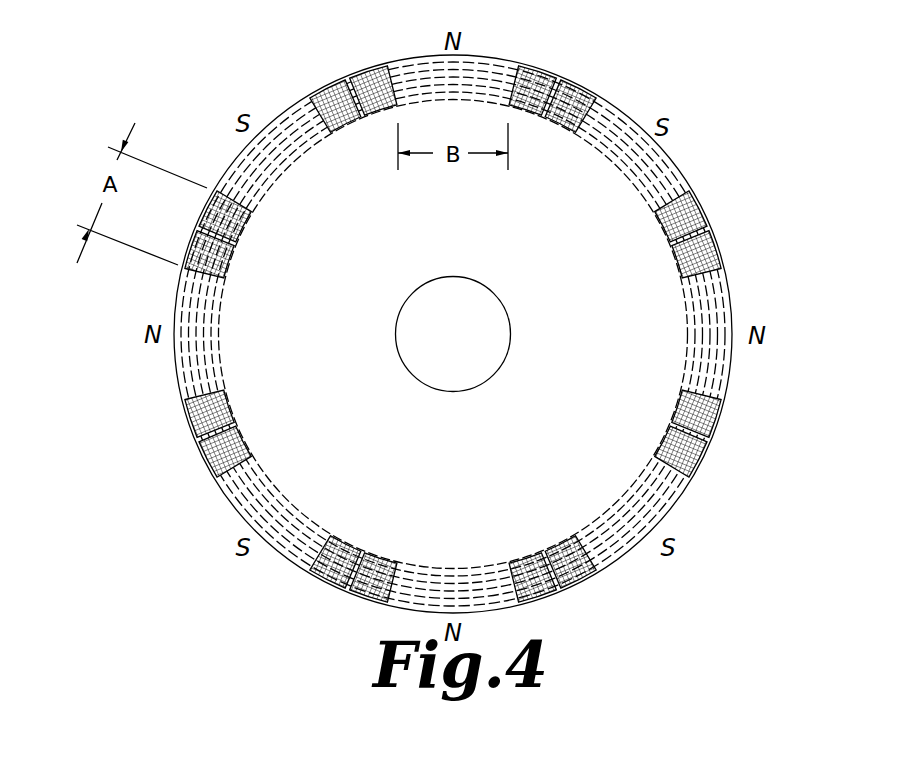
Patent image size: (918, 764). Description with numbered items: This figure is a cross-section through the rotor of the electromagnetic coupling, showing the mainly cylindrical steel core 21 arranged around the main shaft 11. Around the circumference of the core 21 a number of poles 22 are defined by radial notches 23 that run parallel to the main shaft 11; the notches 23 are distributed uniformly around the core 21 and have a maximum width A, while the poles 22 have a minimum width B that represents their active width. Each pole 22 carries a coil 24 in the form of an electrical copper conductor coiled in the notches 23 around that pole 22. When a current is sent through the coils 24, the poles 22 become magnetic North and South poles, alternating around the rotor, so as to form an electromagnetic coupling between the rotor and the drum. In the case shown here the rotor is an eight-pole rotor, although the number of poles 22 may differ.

The main shaft 11 is at (480, 345).
The steel core 21 is at (612, 303).
The poles 22 is at (642, 143).
The radial notches 23 is at (697, 232).
The coil 24 is at (370, 82).